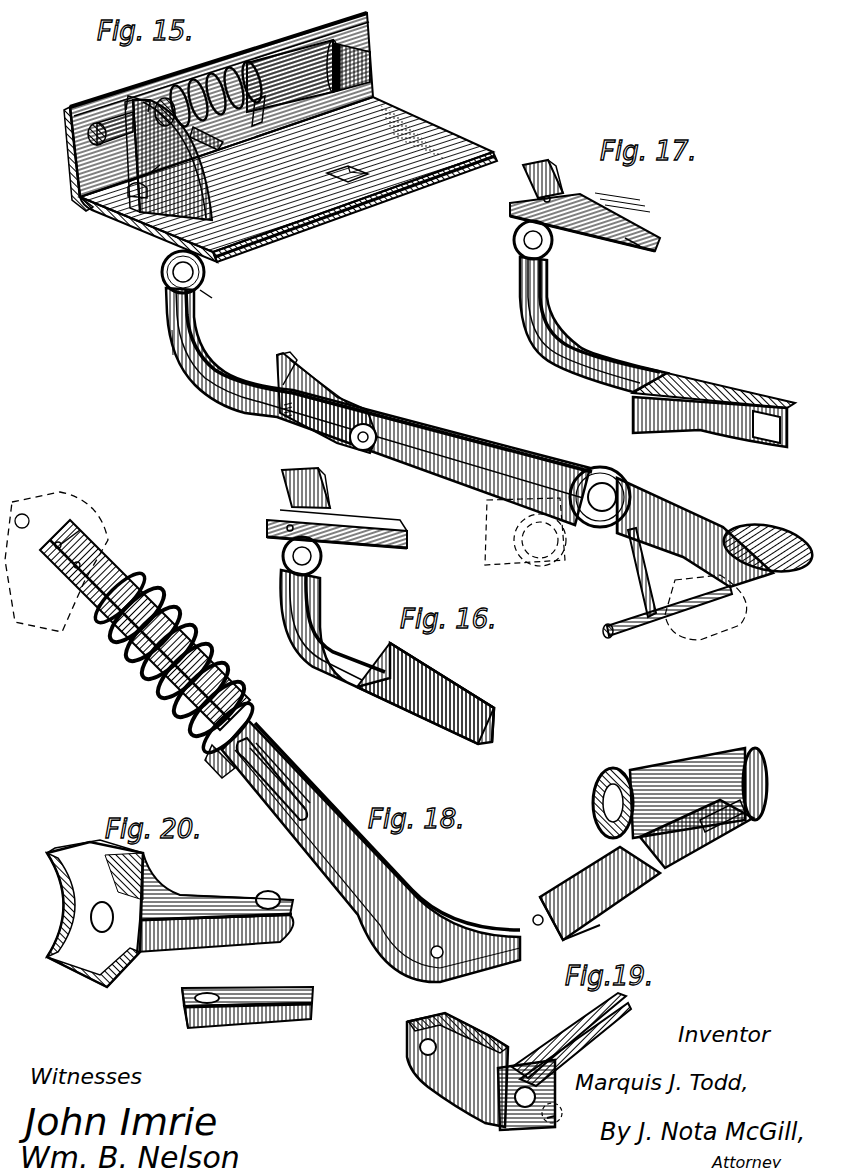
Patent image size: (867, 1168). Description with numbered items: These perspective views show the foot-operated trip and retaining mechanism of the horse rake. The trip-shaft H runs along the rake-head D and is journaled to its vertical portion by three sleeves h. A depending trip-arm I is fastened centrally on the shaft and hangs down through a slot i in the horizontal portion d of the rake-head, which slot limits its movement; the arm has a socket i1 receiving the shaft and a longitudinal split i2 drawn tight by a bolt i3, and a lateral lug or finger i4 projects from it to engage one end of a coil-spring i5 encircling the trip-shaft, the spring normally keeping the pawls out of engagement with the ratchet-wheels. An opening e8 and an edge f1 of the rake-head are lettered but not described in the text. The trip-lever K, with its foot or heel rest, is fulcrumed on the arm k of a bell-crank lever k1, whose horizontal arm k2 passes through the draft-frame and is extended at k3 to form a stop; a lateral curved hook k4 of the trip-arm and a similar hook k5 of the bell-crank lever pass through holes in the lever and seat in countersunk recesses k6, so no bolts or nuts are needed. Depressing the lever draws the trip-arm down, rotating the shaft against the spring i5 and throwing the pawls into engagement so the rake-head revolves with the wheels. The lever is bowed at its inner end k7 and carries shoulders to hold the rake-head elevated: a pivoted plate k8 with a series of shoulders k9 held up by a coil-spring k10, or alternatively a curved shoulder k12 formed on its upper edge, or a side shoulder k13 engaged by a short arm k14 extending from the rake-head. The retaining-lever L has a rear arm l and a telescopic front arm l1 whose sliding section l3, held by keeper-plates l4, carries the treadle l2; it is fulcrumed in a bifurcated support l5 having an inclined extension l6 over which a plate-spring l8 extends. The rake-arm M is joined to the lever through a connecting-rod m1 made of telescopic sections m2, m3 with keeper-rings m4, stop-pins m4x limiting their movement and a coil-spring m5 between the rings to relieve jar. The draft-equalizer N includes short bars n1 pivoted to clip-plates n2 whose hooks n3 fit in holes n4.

In FIG. 15, the bracket plate D is at (280, 137).
In FIG. 17, the bracket plate D is at (585, 212).
In FIG. 16, the bracket plate D is at (337, 525).
In FIG. 15, the horizontal portion of the rake-head d is at (410, 133).
In FIG. 17, the horizontal portion of the rake-head d is at (640, 204).
In FIG. 16, the horizontal portion of the rake-head d is at (360, 537).
In FIG. 15, the slot in plate e8 is at (347, 158).
In FIG. 15, the plate edge f1 is at (70, 175).
In FIG. 15, the trip-shaft H is at (88, 134).
In FIG. 15, the trip-arm I is at (170, 210).
In FIG. 17, the trip-arm I is at (548, 180).
In FIG. 16, the trip-arm I is at (287, 490).
In FIG. 15, the slot i is at (137, 208).
In FIG. 17, the slot i is at (525, 190).
In FIG. 16, the slot i is at (272, 530).
In FIG. 15, the socket i1 is at (130, 105).
In FIG. 15, the longitudinal split i2 is at (127, 182).
In FIG. 15, the bolt i3 is at (183, 96).
In FIG. 15, the lateral lug or finger i4 is at (205, 138).
In FIG. 15, the coil-spring i5 is at (264, 102).
In FIG. 15, the sleeve h is at (288, 55).
In FIG. 15, the trip-lever K is at (491, 437).
In FIG. 17, the trip-lever K is at (593, 329).
In FIG. 16, the trip-lever K is at (387, 657).
In FIG. 15, the arm of bell-crank lever k is at (635, 565).
In FIG. 15, the bell-crank lever k1 is at (669, 590).
In FIG. 15, the horizontal arm k2 is at (690, 630).
In FIG. 15, the stop or extension k3 is at (612, 640).
In FIG. 15, the lateral curved hook k4 is at (178, 282).
In FIG. 17, the lateral curved hook k4 is at (526, 248).
In FIG. 16, the lateral curved hook k4 is at (292, 568).
In FIG. 15, the hook of bell-crank lever k5 is at (612, 492).
In FIG. 15, the countersunk circular recess k6 is at (212, 296).
In FIG. 17, the countersunk circular recess k6 is at (555, 262).
In FIG. 16, the countersunk circular recess k6 is at (318, 585).
In FIG. 15, the curved inner end k7 is at (203, 342).
In FIG. 17, the curved inner end k7 is at (586, 312).
In FIG. 16, the curved inner end k7 is at (346, 642).
In FIG. 15, the plate k8 is at (317, 385).
In FIG. 15, the shoulders k9 is at (290, 362).
In FIG. 15, the coil-spring k10 is at (289, 420).
In FIG. 16, the curved shoulder k12 is at (418, 666).
In FIG. 17, the side shoulder k13 is at (650, 434).
In FIG. 17, the short arm k14 is at (630, 250).
In FIG. 18, the rake-arm M is at (56, 556).
In FIG. 18, the connecting-rod m1 is at (118, 580).
In FIG. 18, the telescopic section m2 is at (110, 612).
In FIG. 18, the telescopic section m3 is at (272, 752).
In FIG. 18, the keeper-ring m4 is at (150, 603).
In FIG. 18, the stop-pin m4x is at (222, 762).
In FIG. 18, the coil-spring m5 is at (165, 700).
In FIG. 18, the retaining-lever L is at (371, 851).
In FIG. 18, the rear arm l is at (428, 918).
In FIG. 18, the front arm l1 is at (690, 858).
In FIG. 18, the treadle l2 is at (680, 793).
In FIG. 18, the sliding section l3 is at (600, 905).
In FIG. 18, the keeper-plates l4 is at (565, 865).
In FIG. 19, the bifurcated support l5 is at (470, 1022).
In FIG. 19, the inclined extension l6 is at (583, 1028).
In FIG. 19, the plate-spring l8 is at (580, 1005).
In FIG. 20, the draft-equalizer N is at (170, 913).
In FIG. 20, the short bars n1 is at (247, 995).
In FIG. 20, the clip-plates n2 is at (245, 921).
In FIG. 20, the short hooks n3 is at (268, 897).
In FIG. 20, the holes n4 is at (205, 1020).